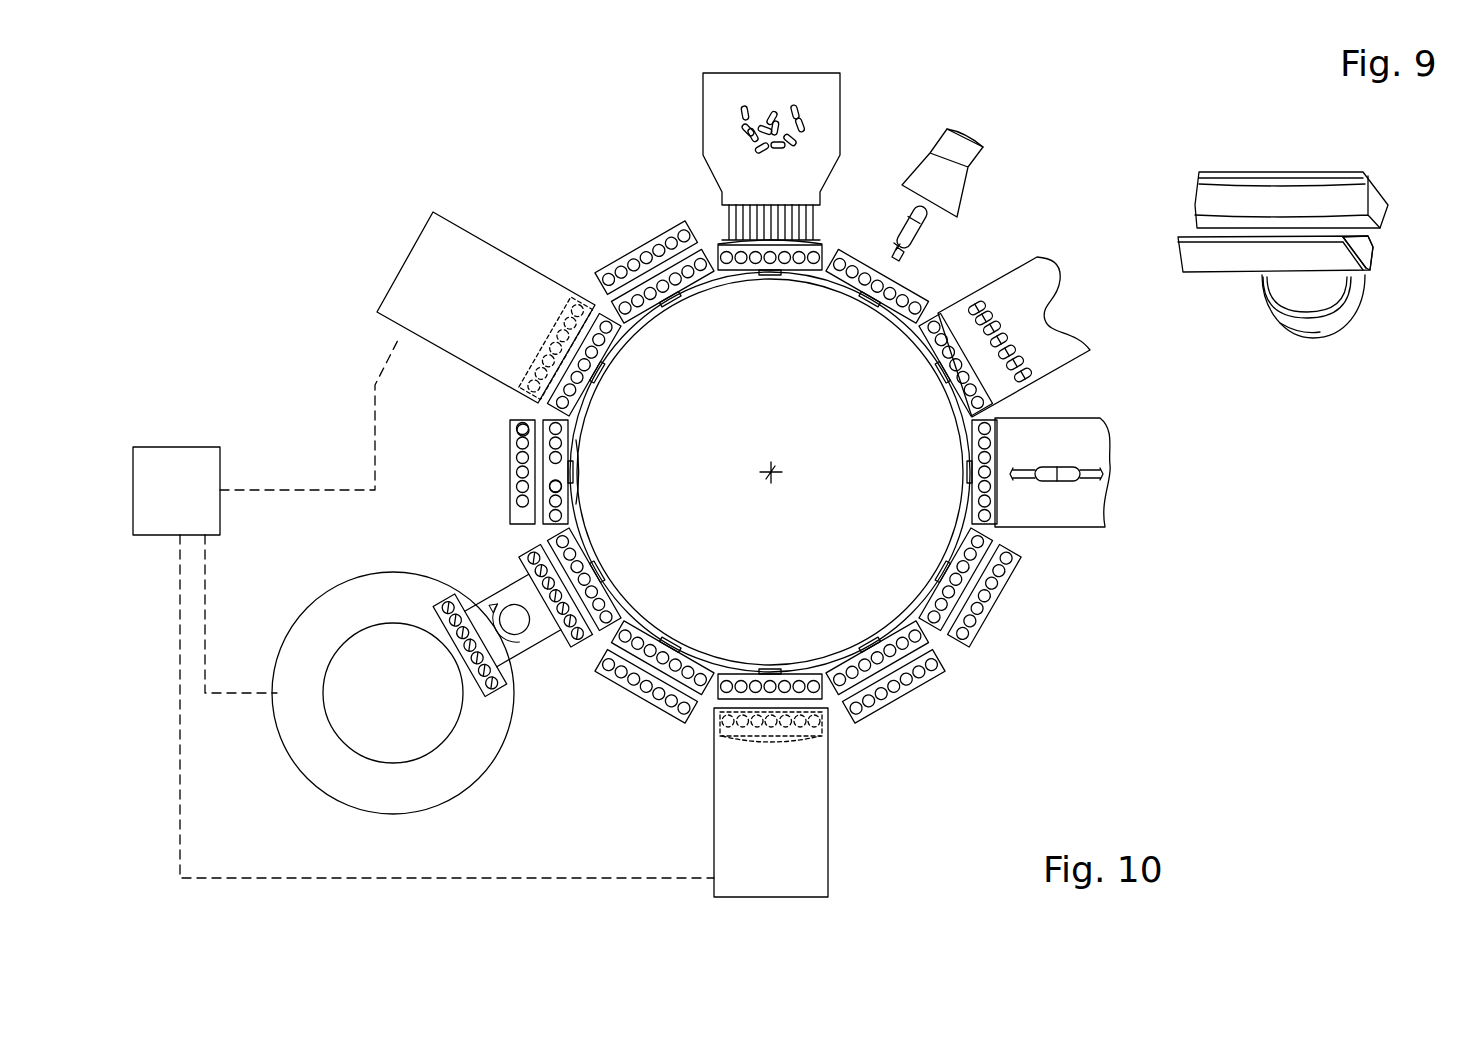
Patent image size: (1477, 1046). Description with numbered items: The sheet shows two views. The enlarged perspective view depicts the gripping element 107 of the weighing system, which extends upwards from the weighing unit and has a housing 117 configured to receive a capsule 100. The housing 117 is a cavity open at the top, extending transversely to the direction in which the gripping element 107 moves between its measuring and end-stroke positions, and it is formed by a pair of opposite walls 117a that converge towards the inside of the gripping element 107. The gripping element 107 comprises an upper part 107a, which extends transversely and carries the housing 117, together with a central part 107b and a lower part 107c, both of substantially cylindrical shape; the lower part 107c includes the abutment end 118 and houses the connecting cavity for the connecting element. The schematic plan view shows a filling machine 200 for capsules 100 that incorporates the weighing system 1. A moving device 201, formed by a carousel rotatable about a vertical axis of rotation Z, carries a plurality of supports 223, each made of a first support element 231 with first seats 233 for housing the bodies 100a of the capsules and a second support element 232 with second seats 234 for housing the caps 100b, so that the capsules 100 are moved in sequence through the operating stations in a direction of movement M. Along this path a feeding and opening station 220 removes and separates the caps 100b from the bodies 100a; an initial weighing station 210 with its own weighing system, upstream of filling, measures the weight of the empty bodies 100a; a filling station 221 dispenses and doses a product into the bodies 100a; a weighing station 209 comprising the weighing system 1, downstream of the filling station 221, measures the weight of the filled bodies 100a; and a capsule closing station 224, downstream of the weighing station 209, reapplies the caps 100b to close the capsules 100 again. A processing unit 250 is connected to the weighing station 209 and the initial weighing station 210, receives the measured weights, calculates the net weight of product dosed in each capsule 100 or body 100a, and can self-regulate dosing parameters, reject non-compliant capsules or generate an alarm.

In FIG. 10, the filling machine 200 is at (240, 132).
In FIG. 10, the weighing system 1 is at (537, 252).
In FIG. 10, the initial weighing station 210 is at (330, 306).
In FIG. 10, the processing unit 250 is at (155, 462).
In FIG. 10, the feeding and opening station 220 is at (705, 118).
In FIG. 10, the capsule 100 is at (745, 112).
In FIG. 10, the body 100a is at (805, 125).
In FIG. 10, the cap 100b is at (796, 120).
In FIG. 10, the moving device 201 is at (858, 590).
In FIG. 10, the filling station 221 is at (367, 710).
In FIG. 10, the weighing station 209 is at (860, 805).
In FIG. 10, the capsule closing station 224 is at (1078, 505).
In FIG. 10, the first support element 231 is at (517, 456).
In FIG. 10, the second support element 232 is at (548, 507).
In FIG. 10, the first seats 233 is at (520, 428).
In FIG. 10, the second seats 234 is at (550, 487).
In FIG. 10, the supports 223 is at (604, 467).
In FIG. 10, the direction of movement M is at (775, 340).
In FIG. 10, the vertical axis of rotation Z is at (770, 478).
In FIG. 9, the housing 117 is at (1303, 179).
In FIG. 9, the opposite walls 117a is at (1265, 233).
In FIG. 9, the abutment end 118 is at (1352, 310).
In FIG. 9, the upper part 107a is at (1368, 250).
In FIG. 9, the gripping element 107 is at (1318, 308).
In FIG. 9, the central part 107b is at (1287, 288).
In FIG. 9, the lower part 107c is at (1302, 327).